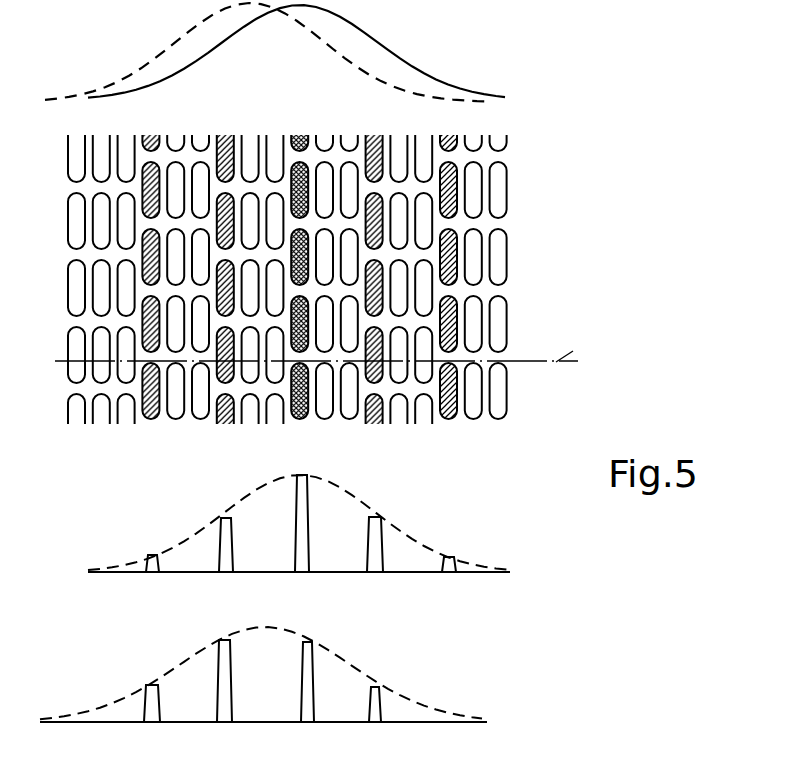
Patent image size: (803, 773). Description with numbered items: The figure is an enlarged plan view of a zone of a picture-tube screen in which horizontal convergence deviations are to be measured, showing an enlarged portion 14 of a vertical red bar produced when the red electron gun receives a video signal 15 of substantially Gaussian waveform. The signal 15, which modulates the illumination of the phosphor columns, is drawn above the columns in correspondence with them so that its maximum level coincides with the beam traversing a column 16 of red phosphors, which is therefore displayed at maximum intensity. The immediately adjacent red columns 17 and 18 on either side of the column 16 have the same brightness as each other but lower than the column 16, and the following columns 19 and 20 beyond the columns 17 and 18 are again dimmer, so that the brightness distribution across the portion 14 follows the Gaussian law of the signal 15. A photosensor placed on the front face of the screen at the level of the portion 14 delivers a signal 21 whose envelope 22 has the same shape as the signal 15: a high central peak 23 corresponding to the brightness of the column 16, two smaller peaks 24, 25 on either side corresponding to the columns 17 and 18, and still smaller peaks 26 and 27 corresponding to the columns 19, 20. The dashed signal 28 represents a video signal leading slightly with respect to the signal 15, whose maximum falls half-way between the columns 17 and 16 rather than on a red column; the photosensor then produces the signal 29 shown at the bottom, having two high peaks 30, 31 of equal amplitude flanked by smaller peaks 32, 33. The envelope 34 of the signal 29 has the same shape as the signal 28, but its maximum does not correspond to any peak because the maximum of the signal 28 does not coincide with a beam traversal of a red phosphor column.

The enlarged portion of a vertical bar 14 is at (335, 282).
The video signal 15 is at (388, 52).
The signal shown in dashed outline 28 is at (166, 63).
The column of red phosphors 16 is at (300, 420).
The adjacent red column 17 is at (216, 420).
The adjacent red column 18 is at (376, 424).
The following red column 19 is at (150, 419).
The following red column 20 is at (450, 421).
The photosensor output signal 21 is at (300, 523).
The envelope of signal 21 22 is at (350, 497).
The high central peak 23 is at (308, 520).
The peak 24 is at (232, 528).
The peak 25 is at (368, 553).
The peak 26 is at (160, 556).
The peak 27 is at (458, 558).
The photosensor output signal 29 is at (263, 693).
The high peak 30 is at (232, 685).
The high peak 31 is at (316, 695).
The smaller peak 32 is at (160, 698).
The smaller peak 33 is at (382, 708).
The envelope of signal 29 34 is at (340, 672).